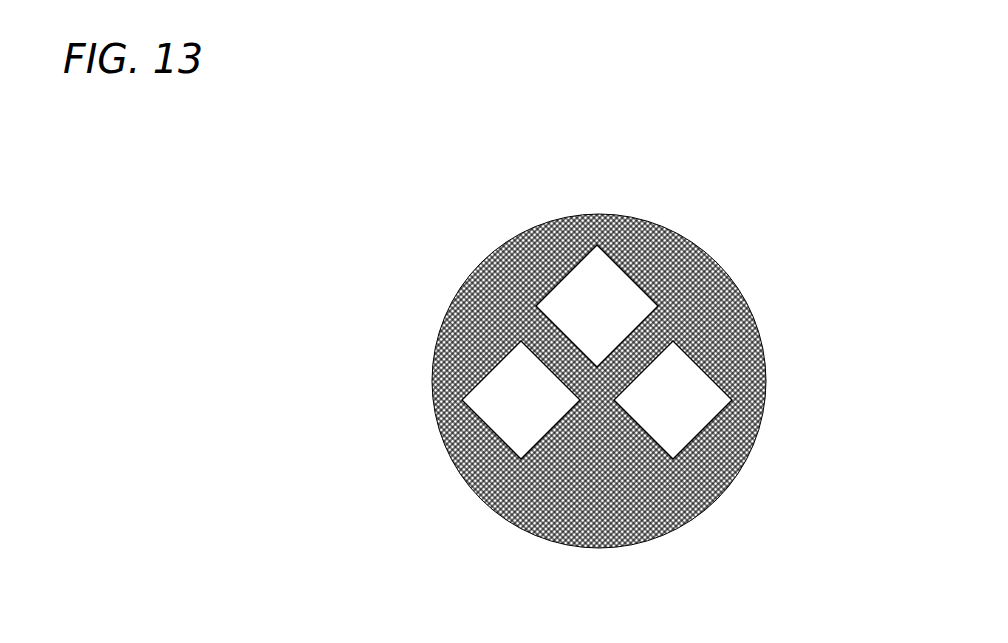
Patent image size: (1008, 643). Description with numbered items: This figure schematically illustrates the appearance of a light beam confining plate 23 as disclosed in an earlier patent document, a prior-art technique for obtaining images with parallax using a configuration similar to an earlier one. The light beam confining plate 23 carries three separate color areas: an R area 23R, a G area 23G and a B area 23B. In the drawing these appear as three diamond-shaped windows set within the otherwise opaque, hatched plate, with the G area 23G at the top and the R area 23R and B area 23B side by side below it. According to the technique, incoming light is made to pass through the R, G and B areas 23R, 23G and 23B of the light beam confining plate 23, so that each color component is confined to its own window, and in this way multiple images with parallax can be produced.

The light beam confining plate 23 is at (468, 318).
The G area 23G is at (611, 275).
The R area 23R is at (510, 429).
The B area 23B is at (686, 428).